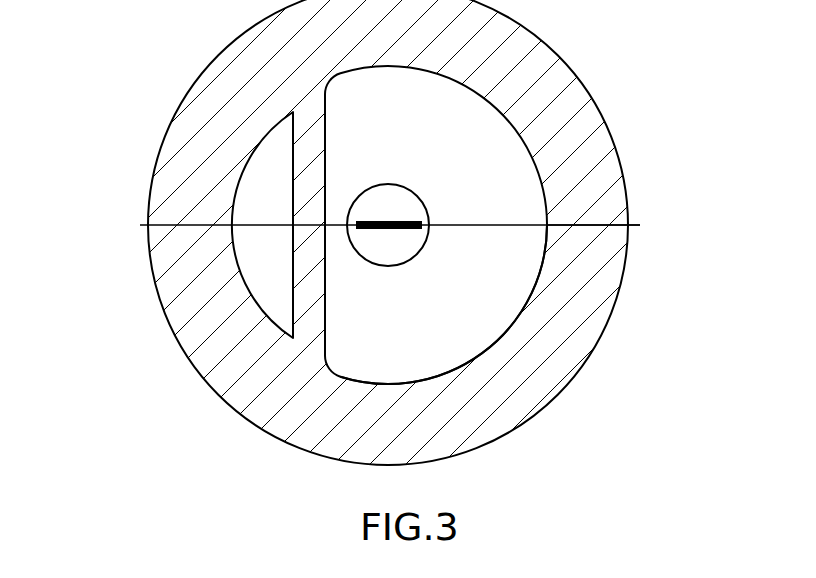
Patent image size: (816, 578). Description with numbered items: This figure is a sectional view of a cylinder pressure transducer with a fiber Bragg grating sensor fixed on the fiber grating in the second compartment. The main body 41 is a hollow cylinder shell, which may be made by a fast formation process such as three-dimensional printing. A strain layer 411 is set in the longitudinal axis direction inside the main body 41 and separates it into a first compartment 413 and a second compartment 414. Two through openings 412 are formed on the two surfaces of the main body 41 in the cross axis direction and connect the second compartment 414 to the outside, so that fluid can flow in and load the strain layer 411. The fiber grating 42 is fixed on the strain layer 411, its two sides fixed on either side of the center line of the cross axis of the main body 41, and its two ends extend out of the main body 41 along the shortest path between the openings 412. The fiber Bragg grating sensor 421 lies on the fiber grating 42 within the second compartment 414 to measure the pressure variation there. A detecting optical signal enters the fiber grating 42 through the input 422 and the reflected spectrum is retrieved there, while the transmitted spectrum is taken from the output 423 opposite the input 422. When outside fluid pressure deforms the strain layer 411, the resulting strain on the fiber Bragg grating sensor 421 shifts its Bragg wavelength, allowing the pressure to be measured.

The main body 41 is at (207, 65).
The strain layer 411 is at (302, 263).
The through opening 412 is at (394, 186).
The first compartment 413 is at (270, 308).
The second compartment 414 is at (467, 338).
The fiber grating 42 is at (483, 228).
The fiber Bragg grating sensor 421 is at (391, 232).
The input 422 is at (633, 225).
The output 423 is at (140, 225).